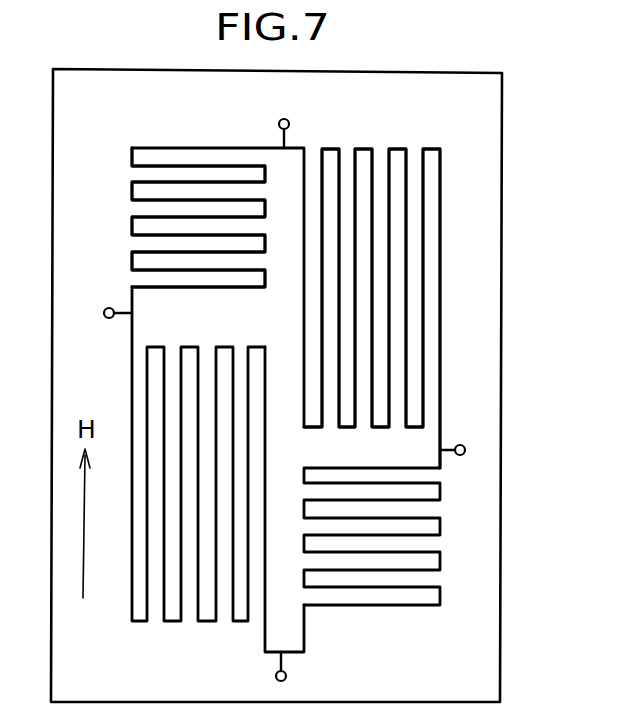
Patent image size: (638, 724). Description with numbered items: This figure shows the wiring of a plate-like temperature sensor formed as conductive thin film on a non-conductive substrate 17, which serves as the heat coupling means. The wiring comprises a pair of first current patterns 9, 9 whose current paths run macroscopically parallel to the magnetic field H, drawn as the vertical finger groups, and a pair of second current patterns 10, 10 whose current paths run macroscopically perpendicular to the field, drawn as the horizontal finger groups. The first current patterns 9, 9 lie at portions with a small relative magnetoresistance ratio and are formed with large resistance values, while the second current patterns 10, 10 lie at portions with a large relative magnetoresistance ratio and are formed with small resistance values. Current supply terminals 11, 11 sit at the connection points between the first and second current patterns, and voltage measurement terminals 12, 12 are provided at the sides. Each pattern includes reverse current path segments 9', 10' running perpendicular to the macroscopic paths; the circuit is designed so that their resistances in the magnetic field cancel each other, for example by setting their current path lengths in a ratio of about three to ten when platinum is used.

The first current pattern 9 is at (289, 385).
The reverse current path segment 9' is at (372, 276).
The second current pattern 10 is at (286, 374).
The reverse current path segment 10' is at (165, 217).
The current supply terminal 11 is at (290, 120).
The voltage measurement terminal 12 is at (106, 307).
The non-conductive substrate 17 is at (503, 627).